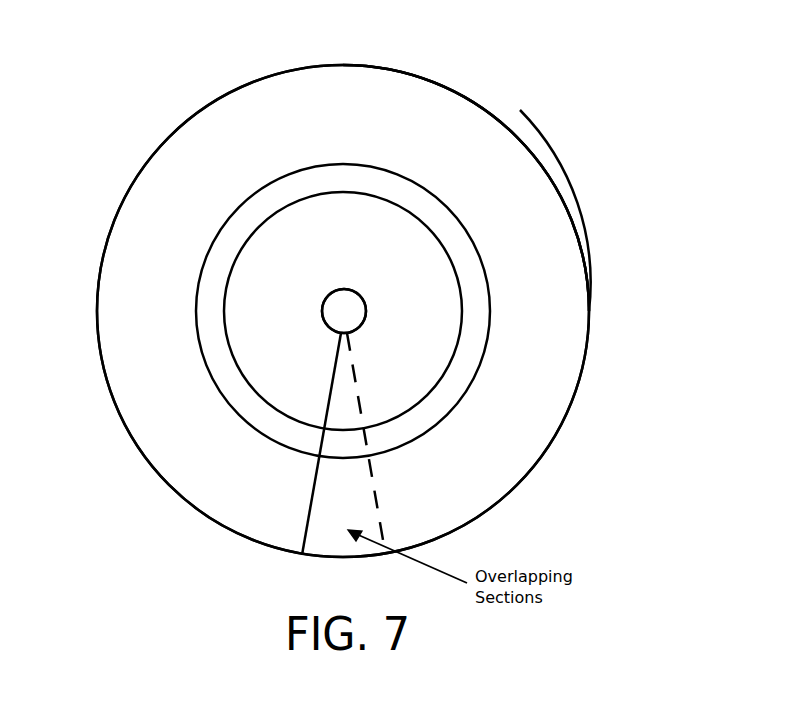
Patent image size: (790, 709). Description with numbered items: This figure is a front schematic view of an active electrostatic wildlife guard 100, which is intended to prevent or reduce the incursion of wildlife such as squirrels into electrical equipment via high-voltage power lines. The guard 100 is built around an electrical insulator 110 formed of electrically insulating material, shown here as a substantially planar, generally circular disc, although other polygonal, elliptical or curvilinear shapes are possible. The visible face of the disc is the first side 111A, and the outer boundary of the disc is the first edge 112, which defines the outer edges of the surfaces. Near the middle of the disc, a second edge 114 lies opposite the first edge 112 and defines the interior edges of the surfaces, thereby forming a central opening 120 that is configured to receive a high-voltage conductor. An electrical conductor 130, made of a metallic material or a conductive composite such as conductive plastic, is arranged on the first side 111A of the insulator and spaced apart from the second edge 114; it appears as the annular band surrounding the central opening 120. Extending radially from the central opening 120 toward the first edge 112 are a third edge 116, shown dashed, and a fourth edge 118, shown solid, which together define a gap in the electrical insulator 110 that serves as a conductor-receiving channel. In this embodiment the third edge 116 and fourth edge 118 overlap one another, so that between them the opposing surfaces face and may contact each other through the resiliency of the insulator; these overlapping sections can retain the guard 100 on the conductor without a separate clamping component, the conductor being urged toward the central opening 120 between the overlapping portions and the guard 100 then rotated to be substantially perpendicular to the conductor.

The active electrostatic wildlife guard 100 is at (578, 140).
The electrical insulator 110 is at (323, 78).
The first side 111A is at (427, 98).
The first edge 112 is at (577, 230).
The electrical conductor 130 is at (462, 257).
The second edge 114 is at (347, 287).
The central opening 120 is at (350, 309).
The fourth edge 118 is at (315, 477).
The third edge 116 is at (370, 477).